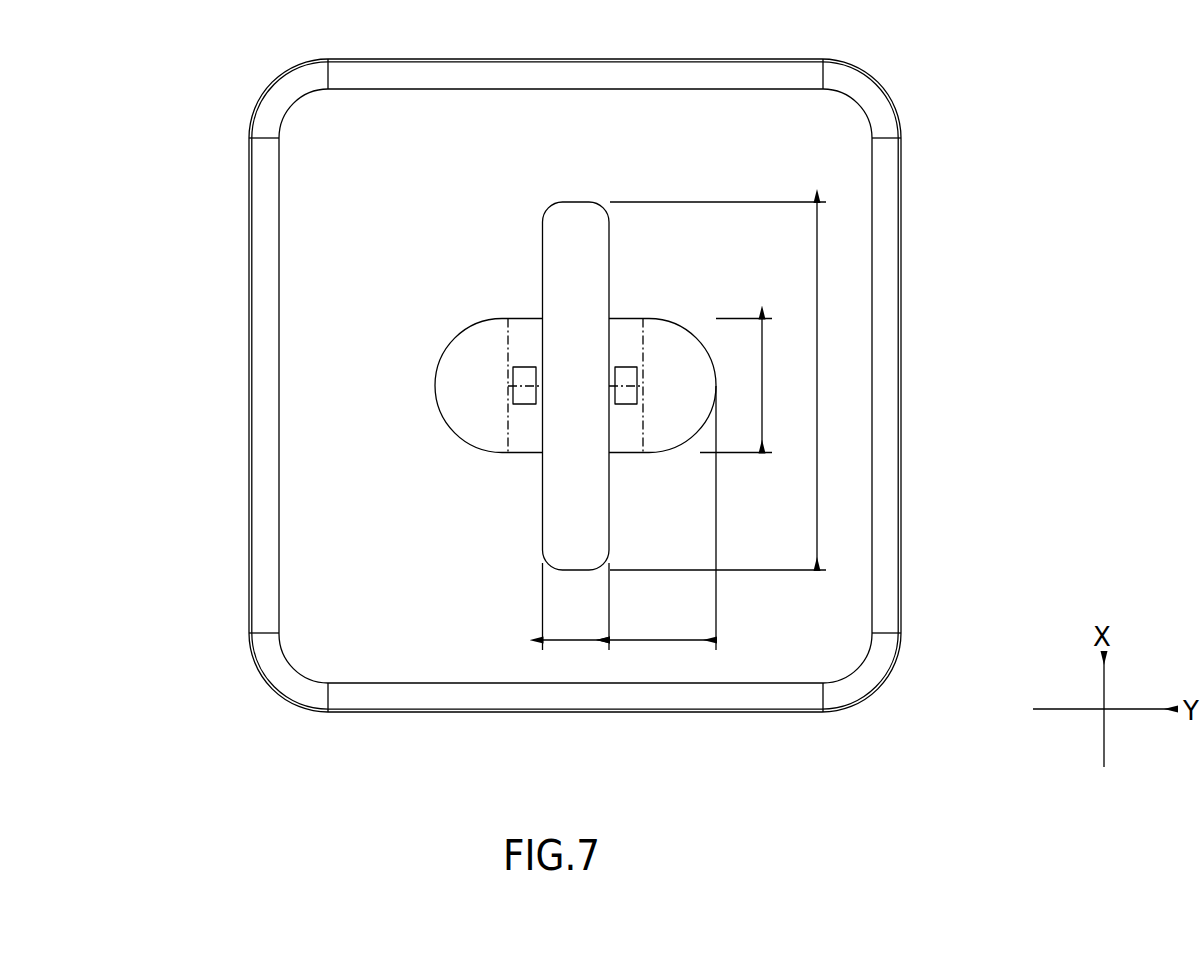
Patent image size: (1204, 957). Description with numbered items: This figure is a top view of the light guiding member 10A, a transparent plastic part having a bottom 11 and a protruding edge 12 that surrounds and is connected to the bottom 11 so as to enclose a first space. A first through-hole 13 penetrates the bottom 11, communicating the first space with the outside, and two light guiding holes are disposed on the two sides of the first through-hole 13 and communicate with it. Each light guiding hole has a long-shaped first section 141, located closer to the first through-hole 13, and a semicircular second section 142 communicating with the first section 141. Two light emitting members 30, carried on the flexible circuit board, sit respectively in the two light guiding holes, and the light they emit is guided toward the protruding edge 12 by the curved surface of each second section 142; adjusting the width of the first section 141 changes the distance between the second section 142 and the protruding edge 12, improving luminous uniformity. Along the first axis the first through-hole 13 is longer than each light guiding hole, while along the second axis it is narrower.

The light guiding member 10A is at (622, 382).
The bottom 11 is at (839, 447).
The protruding edge 12 is at (887, 358).
The first through-hole 13 is at (575, 267).
The light emitting member 30 is at (513, 368).
The first section 141 is at (530, 443).
The second section 142 is at (468, 403).